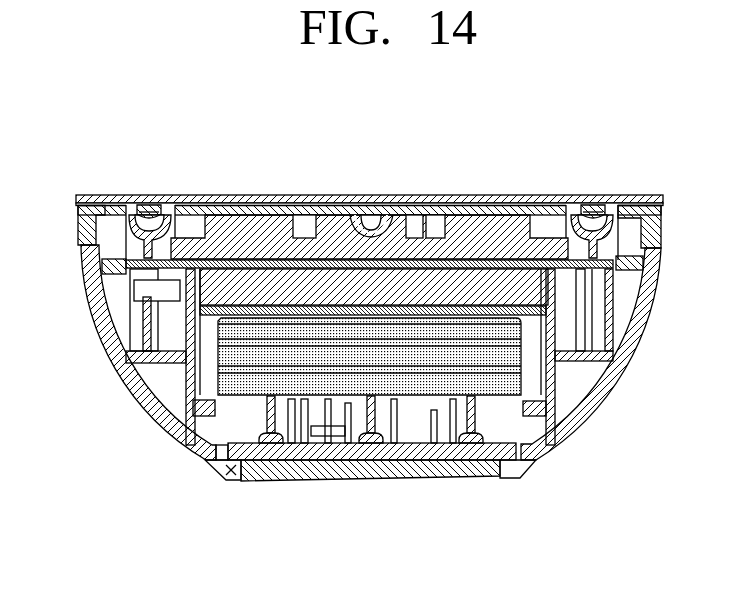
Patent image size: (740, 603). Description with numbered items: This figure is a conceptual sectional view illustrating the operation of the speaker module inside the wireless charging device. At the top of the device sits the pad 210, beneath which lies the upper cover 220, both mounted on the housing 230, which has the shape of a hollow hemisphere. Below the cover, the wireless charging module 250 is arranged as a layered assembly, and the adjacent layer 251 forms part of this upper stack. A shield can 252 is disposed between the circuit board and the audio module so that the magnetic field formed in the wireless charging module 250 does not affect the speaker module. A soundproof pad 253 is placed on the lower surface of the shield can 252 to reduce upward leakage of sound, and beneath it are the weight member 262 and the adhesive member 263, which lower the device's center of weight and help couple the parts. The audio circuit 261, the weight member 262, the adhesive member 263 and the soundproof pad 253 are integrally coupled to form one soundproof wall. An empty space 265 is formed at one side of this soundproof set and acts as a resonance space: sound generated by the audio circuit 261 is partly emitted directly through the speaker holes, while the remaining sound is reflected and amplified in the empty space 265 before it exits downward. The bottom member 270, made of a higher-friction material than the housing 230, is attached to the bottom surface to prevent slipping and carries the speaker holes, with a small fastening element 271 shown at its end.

The pad 210 is at (653, 189).
The upper cover 220 is at (652, 212).
The housing 230 is at (613, 313).
The wireless charging module 250 is at (264, 213).
The adhesive layer 251 is at (328, 267).
The shield can 252 is at (398, 267).
The soundproof pad 253 is at (473, 297).
The audio circuit 261 is at (200, 372).
The weight member 262 is at (197, 345).
The adhesive member 263 is at (200, 315).
The empty space 265 is at (235, 410).
The bottom member 270 is at (352, 472).
The fastening member 271 is at (225, 473).